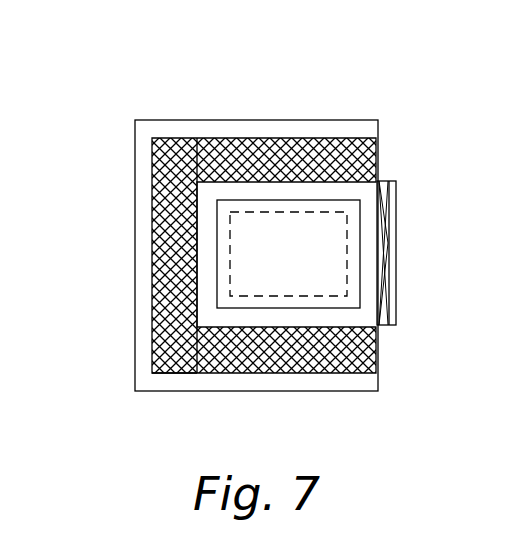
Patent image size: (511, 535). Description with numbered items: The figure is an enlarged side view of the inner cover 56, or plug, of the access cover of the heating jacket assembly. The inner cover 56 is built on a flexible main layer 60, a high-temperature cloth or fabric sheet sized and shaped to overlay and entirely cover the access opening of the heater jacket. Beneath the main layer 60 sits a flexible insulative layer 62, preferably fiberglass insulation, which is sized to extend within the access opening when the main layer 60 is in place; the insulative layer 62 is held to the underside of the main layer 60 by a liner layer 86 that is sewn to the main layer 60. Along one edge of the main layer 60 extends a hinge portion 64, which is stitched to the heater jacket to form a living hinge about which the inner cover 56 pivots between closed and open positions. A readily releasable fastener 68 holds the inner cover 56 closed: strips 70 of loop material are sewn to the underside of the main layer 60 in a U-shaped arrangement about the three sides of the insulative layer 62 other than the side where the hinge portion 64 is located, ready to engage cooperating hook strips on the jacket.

The inner cover 56 is at (101, 91).
The main layer 60 is at (230, 120).
The insulative layer 62 is at (318, 211).
The hinge portion 64 is at (397, 245).
The readily releasable fastener 68 is at (173, 376).
The strips of loop material 70 is at (263, 138).
The liner layer 86 is at (284, 209).